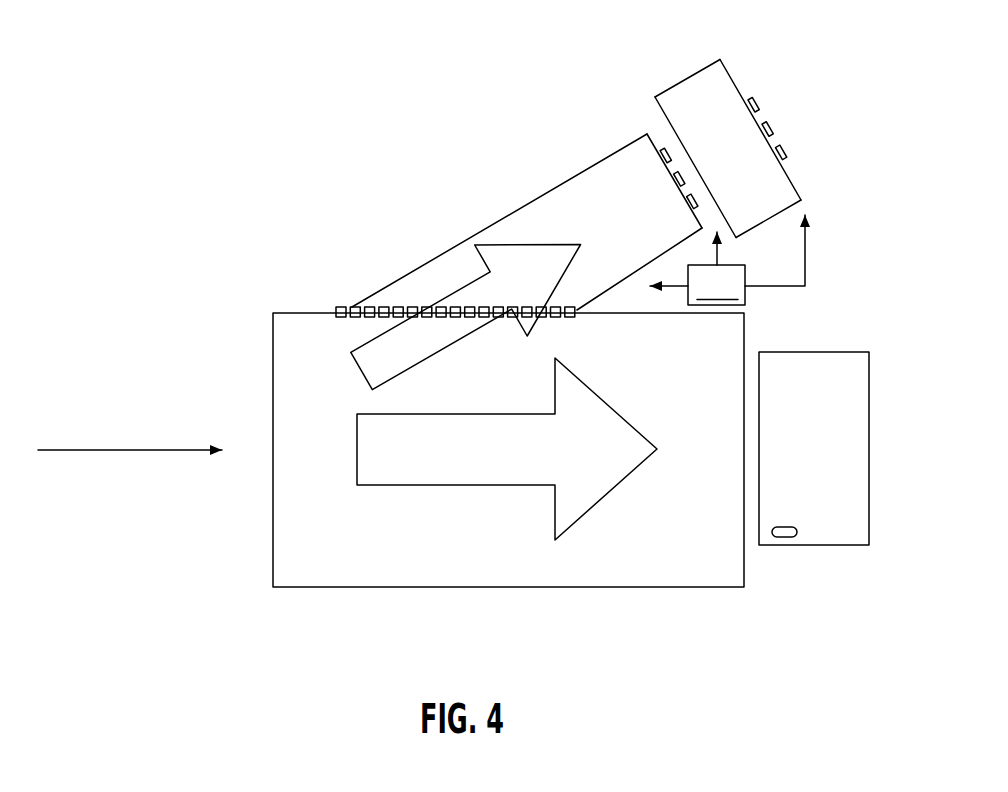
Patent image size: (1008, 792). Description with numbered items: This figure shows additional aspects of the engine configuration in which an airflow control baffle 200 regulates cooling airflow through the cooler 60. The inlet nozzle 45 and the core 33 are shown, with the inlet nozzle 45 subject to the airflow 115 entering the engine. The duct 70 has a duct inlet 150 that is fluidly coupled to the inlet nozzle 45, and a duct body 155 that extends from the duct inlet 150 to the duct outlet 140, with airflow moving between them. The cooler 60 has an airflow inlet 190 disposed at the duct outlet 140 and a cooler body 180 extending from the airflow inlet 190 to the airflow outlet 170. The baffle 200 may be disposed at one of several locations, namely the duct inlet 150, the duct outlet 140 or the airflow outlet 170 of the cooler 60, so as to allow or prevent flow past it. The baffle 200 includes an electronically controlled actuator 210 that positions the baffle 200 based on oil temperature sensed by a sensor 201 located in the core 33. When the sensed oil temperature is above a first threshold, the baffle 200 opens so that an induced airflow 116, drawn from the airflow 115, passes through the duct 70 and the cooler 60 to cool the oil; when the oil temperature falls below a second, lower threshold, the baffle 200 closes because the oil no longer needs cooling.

The core 33 is at (838, 528).
The inlet nozzle 45 is at (532, 587).
The cooler 60 is at (770, 121).
The duct 70 is at (526, 234).
The airflow 115 is at (130, 452).
The induced airflow 116 is at (453, 292).
The duct outlet 140 is at (632, 149).
The duct inlet 150 is at (342, 318).
The duct body 155 is at (500, 218).
The airflow outlet 170 is at (783, 153).
The cooler body 180 is at (798, 195).
The airflow inlet 190 is at (667, 115).
The airflow control baffle 200 is at (652, 124).
The sensor 201 is at (783, 538).
The actuator 210 is at (727, 260).